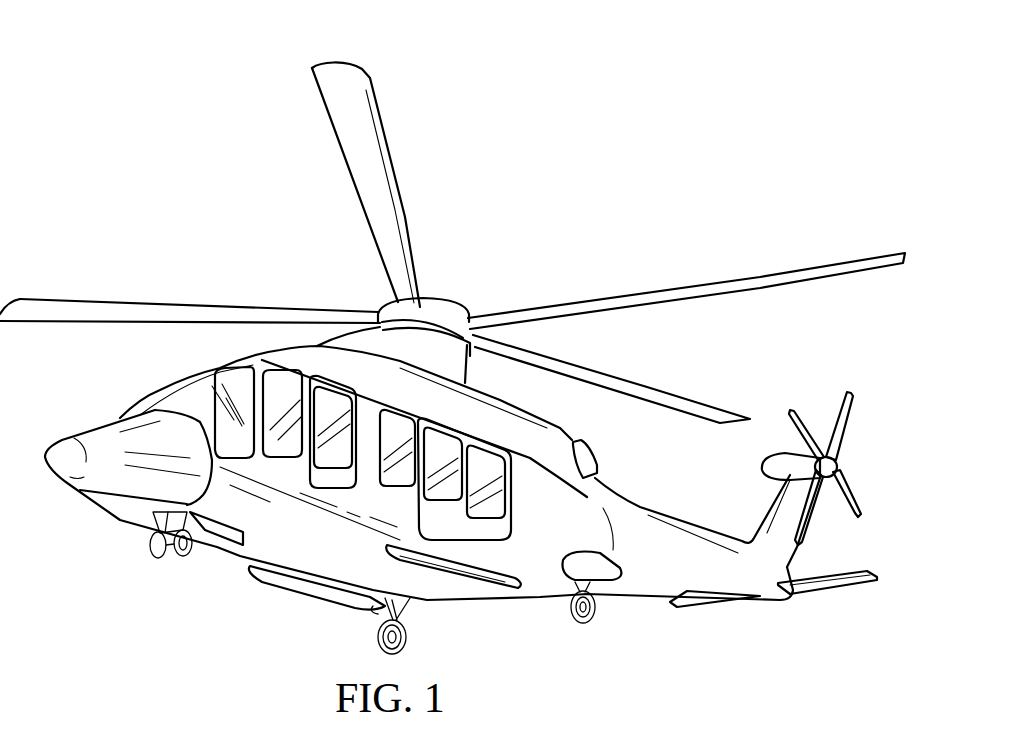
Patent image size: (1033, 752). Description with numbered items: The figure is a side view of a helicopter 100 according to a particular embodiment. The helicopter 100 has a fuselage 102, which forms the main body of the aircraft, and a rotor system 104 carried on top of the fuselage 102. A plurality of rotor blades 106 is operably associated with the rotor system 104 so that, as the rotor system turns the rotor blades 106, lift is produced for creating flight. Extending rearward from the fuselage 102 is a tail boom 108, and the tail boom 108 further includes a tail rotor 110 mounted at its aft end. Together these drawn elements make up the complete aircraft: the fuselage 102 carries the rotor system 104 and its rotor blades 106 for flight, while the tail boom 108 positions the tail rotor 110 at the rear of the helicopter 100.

The helicopter 100 is at (136, 57).
The fuselage 102 is at (257, 553).
The rotor system 104 is at (456, 279).
The rotor blades 106 is at (672, 298).
The tail boom 108 is at (648, 578).
The tail rotor 110 is at (842, 440).